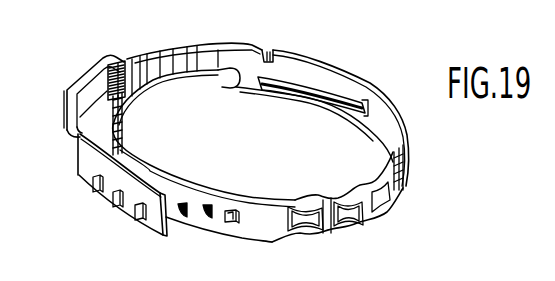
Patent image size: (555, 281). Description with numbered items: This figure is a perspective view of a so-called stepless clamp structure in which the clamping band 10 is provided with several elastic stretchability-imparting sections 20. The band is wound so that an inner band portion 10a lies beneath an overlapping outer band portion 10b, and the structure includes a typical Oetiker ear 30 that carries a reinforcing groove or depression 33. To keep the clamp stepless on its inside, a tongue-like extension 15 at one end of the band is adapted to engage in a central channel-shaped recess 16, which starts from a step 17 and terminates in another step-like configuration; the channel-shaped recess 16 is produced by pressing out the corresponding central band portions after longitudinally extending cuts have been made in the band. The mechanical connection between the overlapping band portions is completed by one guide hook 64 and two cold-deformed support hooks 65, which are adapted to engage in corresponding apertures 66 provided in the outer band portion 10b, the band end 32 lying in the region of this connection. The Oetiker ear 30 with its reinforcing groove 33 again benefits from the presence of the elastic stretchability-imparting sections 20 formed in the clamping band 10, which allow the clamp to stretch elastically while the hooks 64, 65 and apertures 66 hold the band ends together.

The clamping band 10 is at (328, 60).
The inner band portion 10a is at (148, 121).
The outer band portion 10b is at (80, 172).
The tongue-like extension 15 is at (219, 86).
The central channel-shaped recess 16 is at (320, 90).
The step 17 is at (268, 52).
The elastic stretchability-imparting sections 20 is at (313, 239).
The Oetiker ear 30 is at (103, 87).
The band end 32 is at (425, 272).
The reinforcing groove 33 is at (118, 62).
The guide hook 64 is at (229, 223).
The support hooks 65 is at (207, 219).
The apertures 66 is at (140, 215).